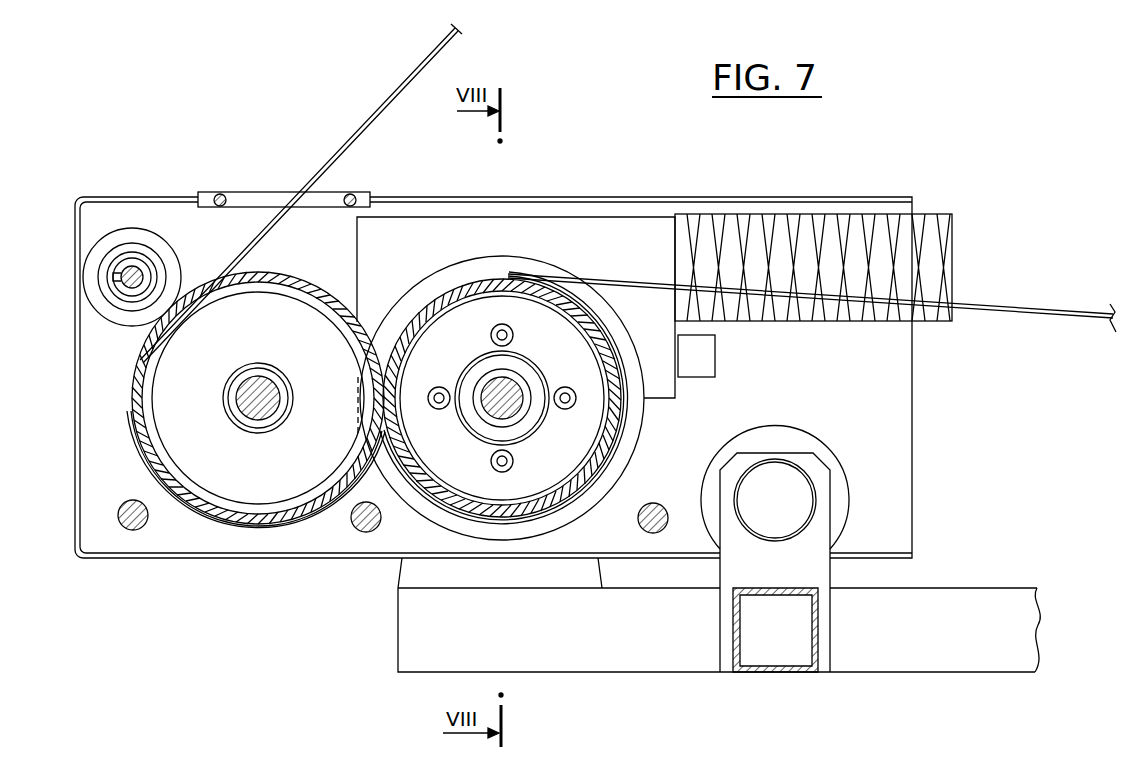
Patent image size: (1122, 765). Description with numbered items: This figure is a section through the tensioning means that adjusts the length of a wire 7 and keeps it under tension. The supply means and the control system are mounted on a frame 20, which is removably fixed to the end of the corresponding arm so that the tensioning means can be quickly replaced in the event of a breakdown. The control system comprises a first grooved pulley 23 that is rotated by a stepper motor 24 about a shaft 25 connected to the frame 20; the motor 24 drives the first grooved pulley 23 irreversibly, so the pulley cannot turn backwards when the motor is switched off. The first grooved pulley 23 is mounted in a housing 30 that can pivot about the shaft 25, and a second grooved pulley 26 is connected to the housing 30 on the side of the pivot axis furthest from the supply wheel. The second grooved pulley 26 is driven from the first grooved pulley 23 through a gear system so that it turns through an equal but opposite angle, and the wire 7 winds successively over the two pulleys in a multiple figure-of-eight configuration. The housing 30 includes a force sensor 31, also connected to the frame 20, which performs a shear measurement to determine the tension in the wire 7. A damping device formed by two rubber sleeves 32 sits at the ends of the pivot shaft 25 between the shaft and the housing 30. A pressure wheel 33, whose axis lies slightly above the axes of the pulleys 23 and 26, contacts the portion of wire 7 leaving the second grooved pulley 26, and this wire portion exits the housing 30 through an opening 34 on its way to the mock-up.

The wire 7 is at (357, 124).
The frame 20 is at (982, 615).
The first grooved pulley 23 is at (502, 389).
The stepper motor 24 is at (940, 249).
The shaft 25 is at (493, 415).
The second grooved pulley 26 is at (280, 278).
The housing 30 is at (630, 197).
The force sensor 31 is at (837, 490).
The rubber sleeve 32 is at (533, 388).
The pressure wheel 33 is at (132, 266).
The opening 34 is at (337, 193).